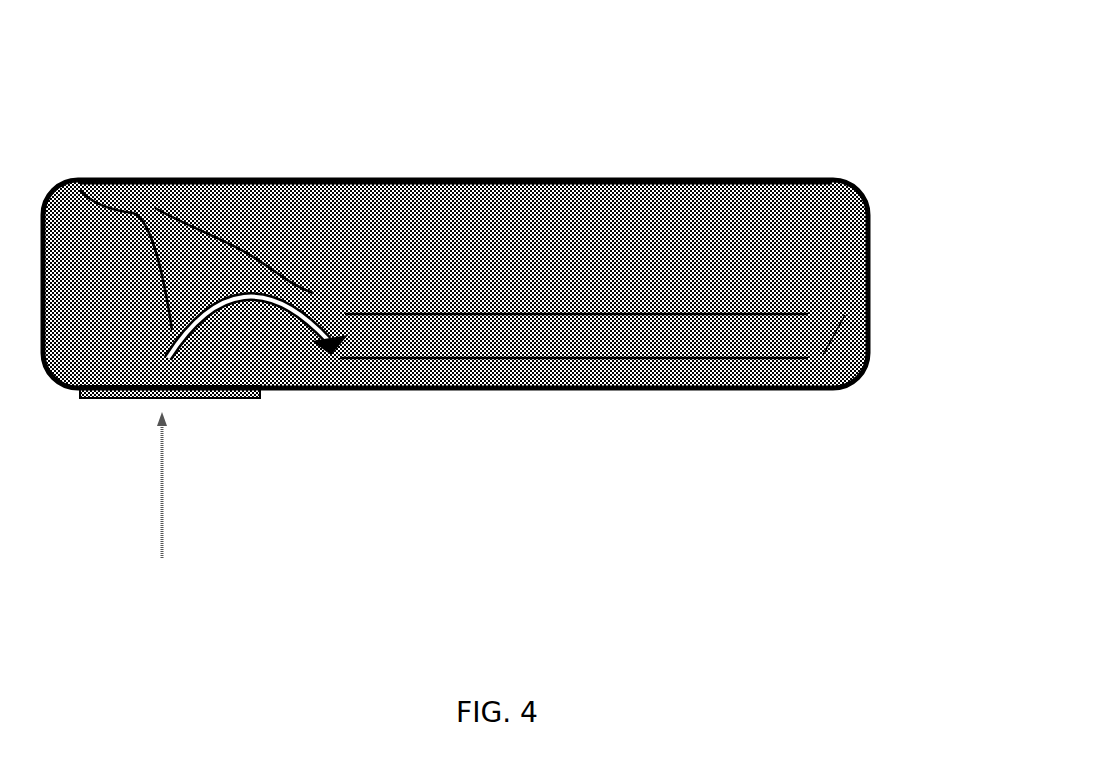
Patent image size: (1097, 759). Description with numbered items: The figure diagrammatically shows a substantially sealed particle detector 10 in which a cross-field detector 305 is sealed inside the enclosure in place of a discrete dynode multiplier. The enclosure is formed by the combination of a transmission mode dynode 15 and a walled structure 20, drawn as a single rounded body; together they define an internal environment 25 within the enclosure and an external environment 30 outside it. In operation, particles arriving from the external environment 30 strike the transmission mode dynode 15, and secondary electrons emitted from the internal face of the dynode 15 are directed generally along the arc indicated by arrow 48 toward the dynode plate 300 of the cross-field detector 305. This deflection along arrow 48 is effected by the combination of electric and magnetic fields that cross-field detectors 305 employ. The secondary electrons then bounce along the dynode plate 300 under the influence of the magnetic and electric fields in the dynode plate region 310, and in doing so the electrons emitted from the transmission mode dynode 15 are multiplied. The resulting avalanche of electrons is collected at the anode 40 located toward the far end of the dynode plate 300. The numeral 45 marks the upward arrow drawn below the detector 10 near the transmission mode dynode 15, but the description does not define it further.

The particle detector 10 is at (528, 162).
The transmission mode dynode 15 is at (250, 397).
The walled structure 20 is at (340, 180).
The internal environment 25 is at (715, 228).
The external environment 30 is at (509, 591).
The anode 40 is at (828, 340).
The inlet flow arrow 45 is at (163, 500).
The arrow 48 is at (80, 190).
The dynode plate 300 is at (650, 360).
The cross-field detector 305 is at (212, 236).
The dynode plate region 310 is at (567, 314).